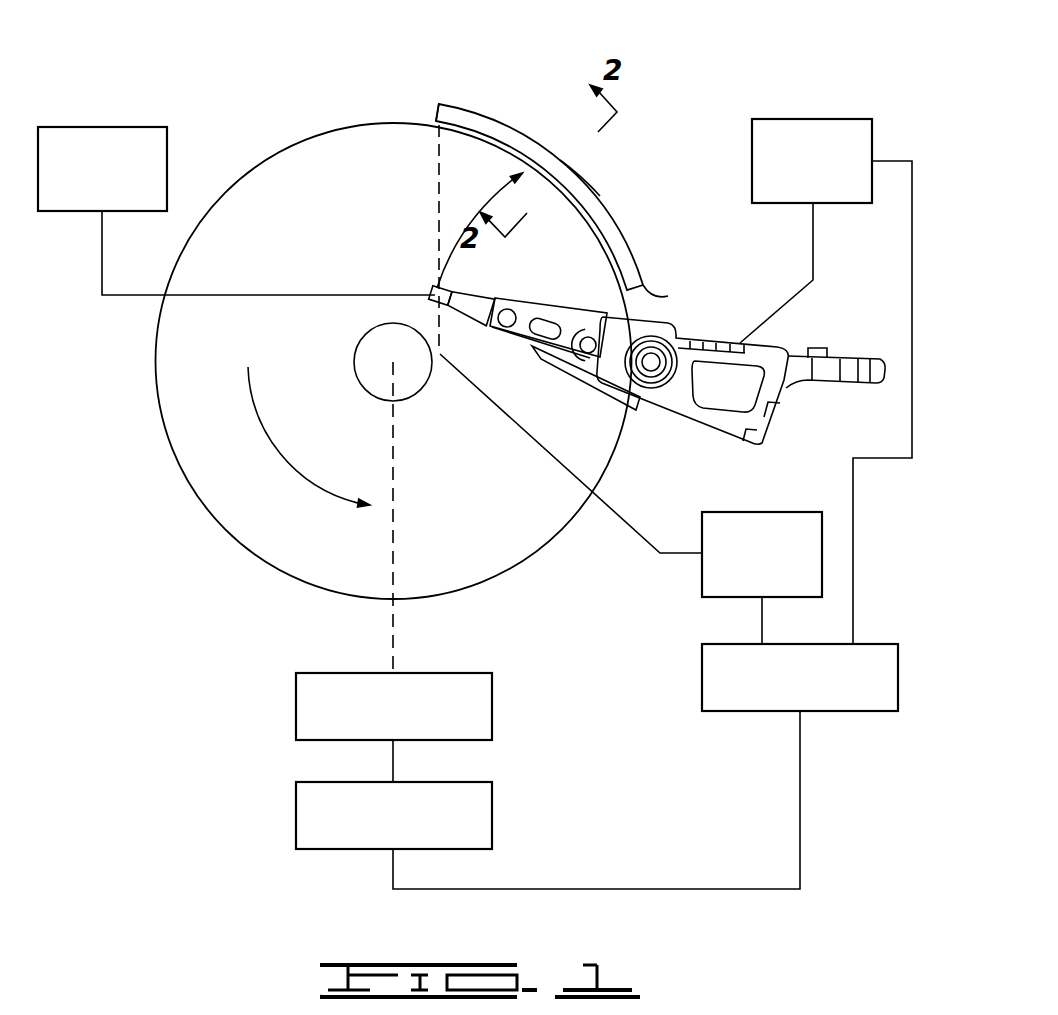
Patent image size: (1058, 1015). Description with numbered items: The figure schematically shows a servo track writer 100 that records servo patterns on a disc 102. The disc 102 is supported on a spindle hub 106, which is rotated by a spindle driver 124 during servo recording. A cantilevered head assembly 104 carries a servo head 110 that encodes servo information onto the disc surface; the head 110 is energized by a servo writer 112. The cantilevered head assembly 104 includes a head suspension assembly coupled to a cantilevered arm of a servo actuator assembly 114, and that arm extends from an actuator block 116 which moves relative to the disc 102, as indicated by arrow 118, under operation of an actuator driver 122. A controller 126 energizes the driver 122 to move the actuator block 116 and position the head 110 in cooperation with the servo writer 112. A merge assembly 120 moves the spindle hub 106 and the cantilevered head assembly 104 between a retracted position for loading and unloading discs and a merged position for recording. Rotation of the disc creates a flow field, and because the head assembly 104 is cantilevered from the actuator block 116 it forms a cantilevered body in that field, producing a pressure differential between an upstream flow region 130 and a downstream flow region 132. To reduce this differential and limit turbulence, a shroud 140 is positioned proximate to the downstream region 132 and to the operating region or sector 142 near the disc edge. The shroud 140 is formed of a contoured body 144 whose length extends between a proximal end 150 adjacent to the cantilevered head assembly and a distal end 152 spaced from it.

The servo track writer 100 is at (555, 87).
The disc 102 is at (307, 138).
The cantilevered head assembly 104 is at (523, 299).
The spindle hub 106 is at (295, 703).
The servo head 110 is at (437, 272).
The servo writer 112 is at (757, 510).
The servo actuator assembly 114 is at (662, 315).
The actuator block 116 is at (625, 420).
The arrow 118 is at (480, 187).
The merge assembly 120 is at (118, 127).
The actuator driver 122 is at (817, 118).
The spindle driver 124 is at (295, 808).
The controller 126 is at (702, 680).
The upstream flow region 130 is at (507, 525).
The downstream flow region 132 is at (567, 242).
The shroud 140 is at (460, 105).
The operating region or sector 142 is at (437, 178).
The contoured body 144 is at (590, 178).
The proximal end 150 is at (658, 298).
The distal end 152 is at (438, 104).